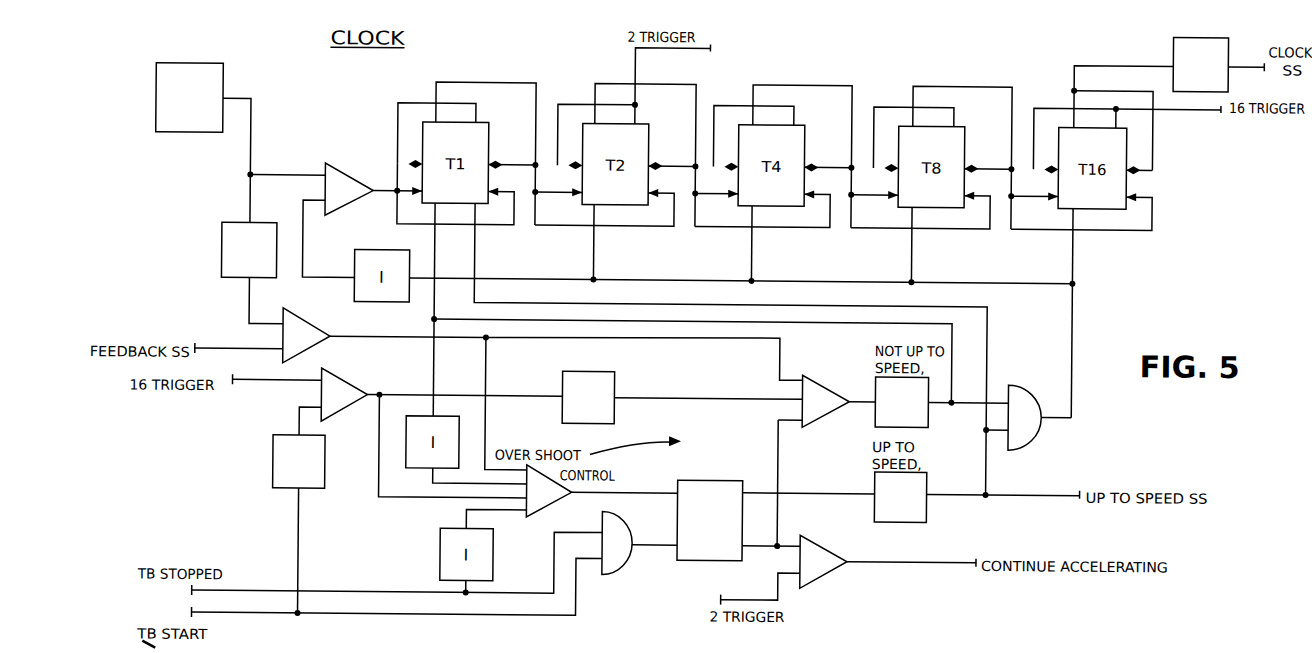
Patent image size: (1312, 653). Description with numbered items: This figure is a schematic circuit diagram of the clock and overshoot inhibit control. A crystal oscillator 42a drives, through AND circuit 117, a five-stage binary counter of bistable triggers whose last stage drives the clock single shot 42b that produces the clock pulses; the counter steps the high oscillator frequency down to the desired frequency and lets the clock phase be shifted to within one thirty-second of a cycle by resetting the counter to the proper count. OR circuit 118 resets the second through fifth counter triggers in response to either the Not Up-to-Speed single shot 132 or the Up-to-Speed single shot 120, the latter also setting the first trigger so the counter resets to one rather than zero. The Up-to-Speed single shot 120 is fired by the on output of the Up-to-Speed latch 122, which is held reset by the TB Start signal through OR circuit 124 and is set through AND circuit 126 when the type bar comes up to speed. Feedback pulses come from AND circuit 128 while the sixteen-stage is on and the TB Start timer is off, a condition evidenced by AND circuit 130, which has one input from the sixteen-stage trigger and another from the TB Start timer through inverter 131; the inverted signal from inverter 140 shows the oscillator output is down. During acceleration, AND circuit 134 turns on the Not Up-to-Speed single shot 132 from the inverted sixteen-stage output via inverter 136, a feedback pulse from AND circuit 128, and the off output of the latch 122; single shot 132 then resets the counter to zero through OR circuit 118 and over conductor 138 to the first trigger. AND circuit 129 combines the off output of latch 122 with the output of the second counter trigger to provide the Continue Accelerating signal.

The crystal oscillator 42a is at (206, 69).
The clock single shot 42b is at (1212, 34).
The AND circuit 117 is at (366, 180).
The OR circuit 118 is at (1040, 432).
The Up-to-Speed single shot 120 is at (930, 511).
The Up-to-Speed latch 122 is at (717, 561).
The OR circuit 124 is at (622, 563).
The AND circuit 126 is at (558, 500).
The AND circuit 128 is at (319, 341).
The AND circuit 129 is at (835, 550).
The AND circuit 130 is at (351, 393).
The inverter 131 is at (317, 492).
The Not Up-to-Speed single shot 132 is at (931, 423).
The AND circuit 134 is at (836, 393).
The inverter 136 is at (615, 384).
The conductor 138 is at (463, 320).
The inverter 140 is at (222, 263).